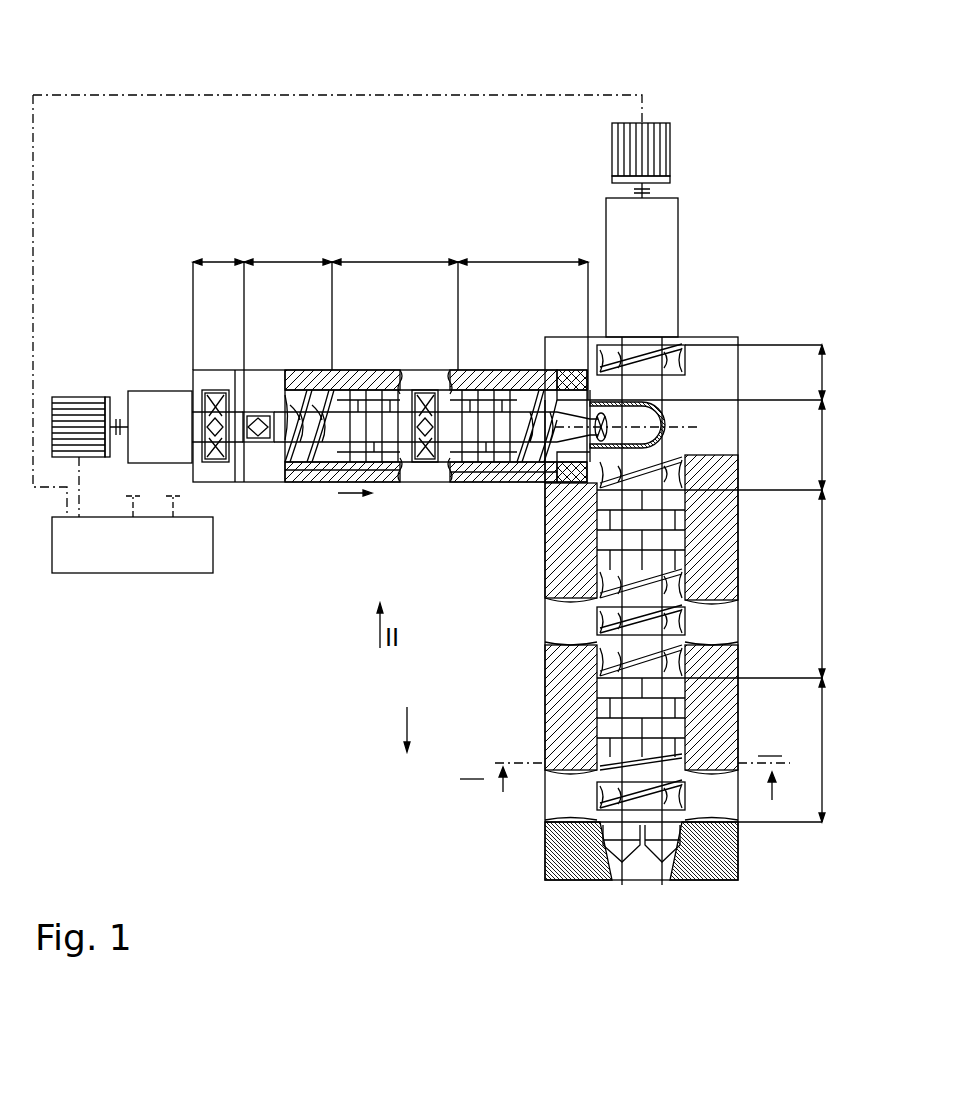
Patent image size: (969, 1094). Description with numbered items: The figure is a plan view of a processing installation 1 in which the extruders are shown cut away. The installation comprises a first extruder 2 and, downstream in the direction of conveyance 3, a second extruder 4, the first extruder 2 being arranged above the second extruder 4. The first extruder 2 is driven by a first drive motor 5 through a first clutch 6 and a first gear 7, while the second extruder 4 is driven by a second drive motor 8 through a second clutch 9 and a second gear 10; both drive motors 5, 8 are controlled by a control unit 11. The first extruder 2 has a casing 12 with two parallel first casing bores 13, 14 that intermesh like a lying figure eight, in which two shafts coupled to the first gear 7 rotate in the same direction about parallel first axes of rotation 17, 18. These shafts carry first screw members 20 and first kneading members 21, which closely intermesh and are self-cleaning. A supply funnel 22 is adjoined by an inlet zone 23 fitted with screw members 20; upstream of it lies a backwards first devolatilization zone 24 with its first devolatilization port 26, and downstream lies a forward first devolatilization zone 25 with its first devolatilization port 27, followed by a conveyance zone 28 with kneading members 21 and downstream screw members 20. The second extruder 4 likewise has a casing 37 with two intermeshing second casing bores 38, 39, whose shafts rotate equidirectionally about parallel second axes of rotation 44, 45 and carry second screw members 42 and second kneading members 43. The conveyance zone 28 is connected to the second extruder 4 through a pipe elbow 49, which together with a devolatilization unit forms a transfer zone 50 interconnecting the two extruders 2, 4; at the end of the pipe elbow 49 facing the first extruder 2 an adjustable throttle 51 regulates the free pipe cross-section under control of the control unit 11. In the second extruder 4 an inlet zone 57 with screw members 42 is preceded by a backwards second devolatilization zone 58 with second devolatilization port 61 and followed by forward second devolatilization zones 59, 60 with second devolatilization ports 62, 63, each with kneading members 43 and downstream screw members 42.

The processing installation 1 is at (524, 86).
The first extruder 2 is at (377, 411).
The direction of conveyance 3 is at (357, 494).
The second extruder 4 is at (640, 504).
The first drive motor 5 is at (66, 397).
The first clutch 6 is at (116, 420).
The first gear 7 is at (150, 395).
The second drive motor 8 is at (670, 150).
The second clutch 9 is at (650, 190).
The second gear 10 is at (668, 260).
The control unit 11 is at (140, 573).
The casing 12 is at (440, 483).
The first casing bore 13 is at (467, 394).
The first casing bore 14 is at (476, 483).
The first axis of rotation 17 is at (315, 402).
The first axis of rotation 18 is at (310, 483).
The first screw member 20 is at (294, 483).
The first kneading member 21 is at (381, 483).
The supply funnel 22 is at (257, 414).
The inlet zone 23 is at (288, 249).
The first devolatilization zone 24 is at (218, 249).
The first devolatilization zone 25 is at (395, 249).
The first devolatilization port 26 is at (215, 392).
The first devolatilization port 27 is at (423, 392).
The conveyance zone 28 is at (523, 249).
The casing 37 is at (545, 603).
The second casing bore 38 is at (600, 673).
The second casing bore 39 is at (600, 700).
The second screw member 42 is at (677, 345).
The second kneading member 43 is at (672, 520).
The second axis of rotation 44 is at (690, 858).
The second axis of rotation 45 is at (598, 858).
The pipe elbow 49 is at (655, 435).
The transfer zone 50 is at (603, 393).
The adjustable throttle 51 is at (540, 430).
The inlet zone 57 is at (806, 445).
The second devolatilization zone 58 is at (806, 372).
The second devolatilization zone 59 is at (806, 584).
The second devolatilization zone 60 is at (806, 750).
The second devolatilization port 61 is at (685, 358).
The second devolatilization port 62 is at (600, 622).
The second devolatilization port 63 is at (600, 802).